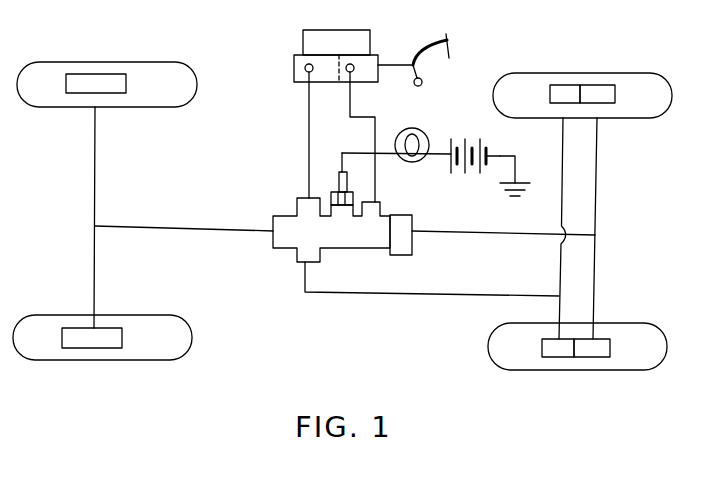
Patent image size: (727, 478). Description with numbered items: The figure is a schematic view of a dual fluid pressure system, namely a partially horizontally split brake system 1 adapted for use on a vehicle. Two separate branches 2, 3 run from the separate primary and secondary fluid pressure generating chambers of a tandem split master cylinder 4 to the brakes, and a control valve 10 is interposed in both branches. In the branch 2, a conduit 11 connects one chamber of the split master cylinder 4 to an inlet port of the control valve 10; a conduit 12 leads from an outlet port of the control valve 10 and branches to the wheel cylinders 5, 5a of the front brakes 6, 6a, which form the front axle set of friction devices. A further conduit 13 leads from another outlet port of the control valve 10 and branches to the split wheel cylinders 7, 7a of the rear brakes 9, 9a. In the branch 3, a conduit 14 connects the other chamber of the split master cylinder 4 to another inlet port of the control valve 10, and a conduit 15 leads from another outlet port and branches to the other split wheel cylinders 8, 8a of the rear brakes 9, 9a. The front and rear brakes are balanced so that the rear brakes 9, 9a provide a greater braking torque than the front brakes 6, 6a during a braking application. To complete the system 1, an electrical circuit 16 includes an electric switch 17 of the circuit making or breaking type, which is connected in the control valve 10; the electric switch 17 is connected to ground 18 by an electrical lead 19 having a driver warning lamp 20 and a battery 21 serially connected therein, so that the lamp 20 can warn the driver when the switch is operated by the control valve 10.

The split brake system 1 is at (492, 53).
The branch 2 is at (258, 176).
The branch 3 is at (613, 205).
The split master cylinder 4 is at (312, 42).
The wheel cylinder 5 is at (100, 75).
The wheel cylinder 5a is at (85, 341).
The front brake 6 is at (62, 98).
The front brake 6a is at (23, 328).
The split wheel cylinder 7 is at (566, 86).
The split wheel cylinder 7a is at (557, 358).
The split wheel cylinder 8 is at (600, 86).
The split wheel cylinder 8a is at (597, 358).
The rear brake 9 is at (637, 111).
The rear brake 9a is at (665, 313).
The control valve 10 is at (342, 230).
The conduit 11 is at (309, 176).
The conduit 12 is at (152, 227).
The conduit 13 is at (400, 294).
The conduit 14 is at (377, 122).
The conduit 15 is at (473, 238).
The electrical circuit 16 is at (469, 126).
The electric switch 17 is at (332, 191).
The ground 18 is at (516, 202).
The electrical lead 19 is at (500, 157).
The lamp 20 is at (404, 163).
The battery 21 is at (465, 175).